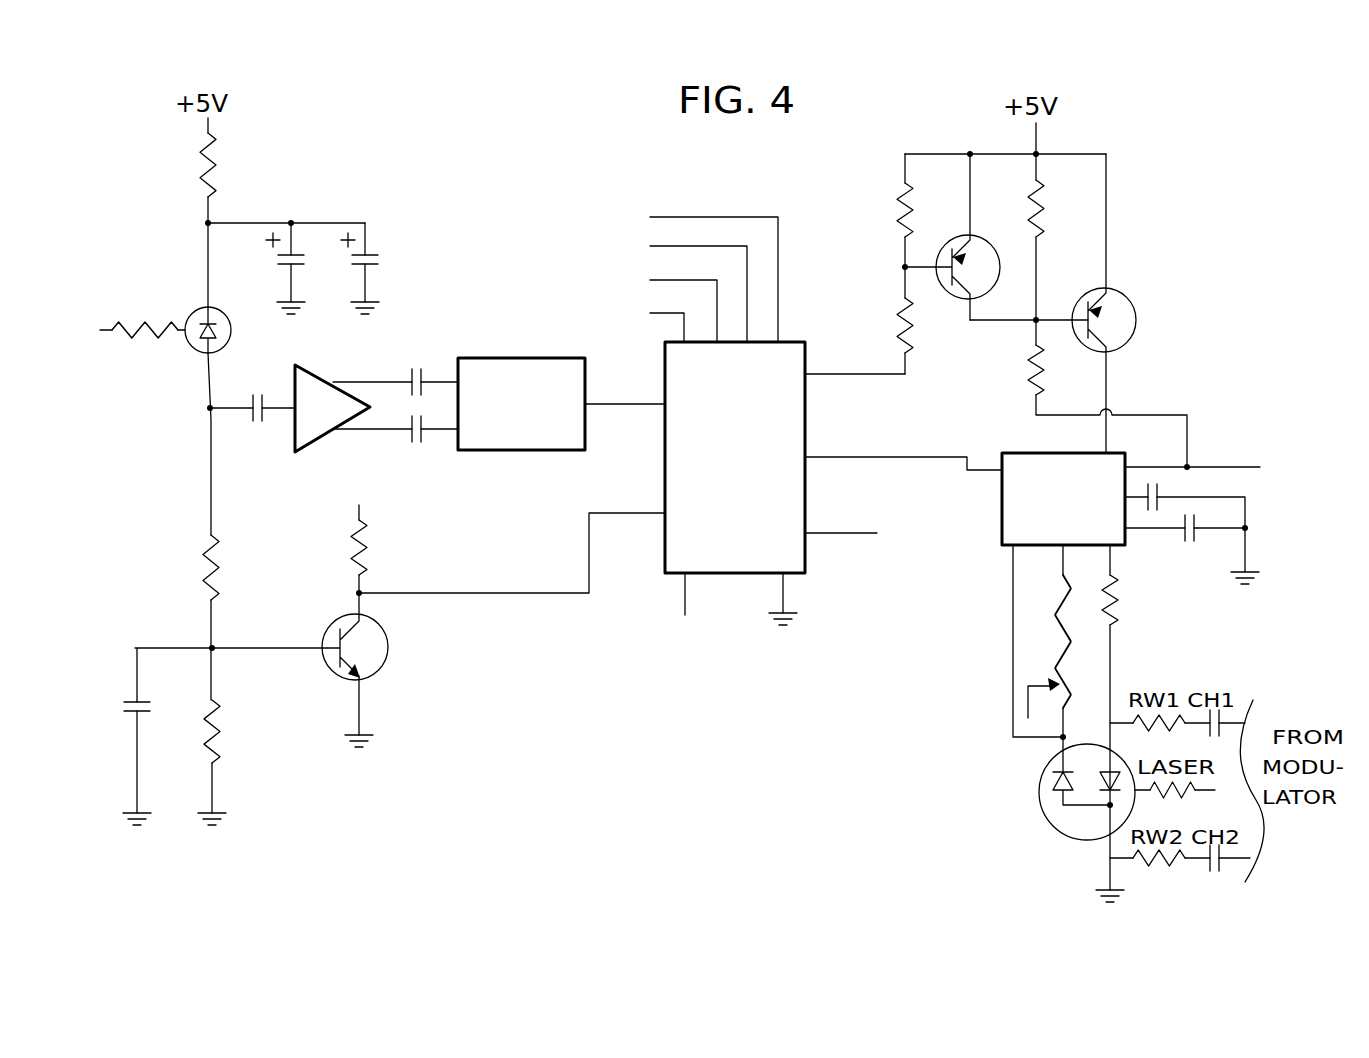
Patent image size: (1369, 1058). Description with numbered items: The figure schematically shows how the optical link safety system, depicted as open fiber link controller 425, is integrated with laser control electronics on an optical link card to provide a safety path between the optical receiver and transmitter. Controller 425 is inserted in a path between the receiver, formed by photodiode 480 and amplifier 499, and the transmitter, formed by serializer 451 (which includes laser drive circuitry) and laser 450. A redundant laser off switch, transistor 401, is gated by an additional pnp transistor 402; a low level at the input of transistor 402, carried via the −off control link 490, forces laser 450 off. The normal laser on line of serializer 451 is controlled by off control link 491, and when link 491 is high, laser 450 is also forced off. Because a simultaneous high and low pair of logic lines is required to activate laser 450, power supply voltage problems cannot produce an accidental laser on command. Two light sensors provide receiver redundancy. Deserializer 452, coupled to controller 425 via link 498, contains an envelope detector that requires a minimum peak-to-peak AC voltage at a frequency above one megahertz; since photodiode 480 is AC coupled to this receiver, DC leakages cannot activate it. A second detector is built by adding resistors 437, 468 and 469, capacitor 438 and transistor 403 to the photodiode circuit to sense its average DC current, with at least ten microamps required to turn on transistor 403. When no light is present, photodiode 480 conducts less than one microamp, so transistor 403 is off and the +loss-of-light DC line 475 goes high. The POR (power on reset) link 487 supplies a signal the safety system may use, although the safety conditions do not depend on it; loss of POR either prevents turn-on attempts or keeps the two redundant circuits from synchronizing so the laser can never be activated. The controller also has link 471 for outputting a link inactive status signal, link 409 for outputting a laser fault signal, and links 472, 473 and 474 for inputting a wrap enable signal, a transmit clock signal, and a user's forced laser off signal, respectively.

The photodiode 480 is at (190, 310).
The amplifier 499 is at (312, 372).
The resistor 469 is at (205, 562).
The resistor 468 is at (222, 740).
The capacitor 438 is at (120, 706).
The resistor 437 is at (355, 527).
The transistor 403 is at (388, 637).
The +loss-of-light DC line 475 is at (520, 594).
The deserializer 452 is at (540, 452).
The link 498 is at (637, 406).
The open fiber link controller 425 is at (745, 576).
The link 472 is at (735, 216).
The POR link 487 is at (693, 247).
The link 473 is at (662, 279).
The link 474 is at (670, 314).
The -off control link 490 is at (890, 377).
The off control link 491 is at (935, 456).
The link 471 is at (848, 536).
The pnp transistor 402 is at (982, 238).
The transistor 401 is at (1127, 300).
The serializer 451 is at (1128, 548).
The link 409 is at (1237, 466).
The laser 450 is at (1055, 832).